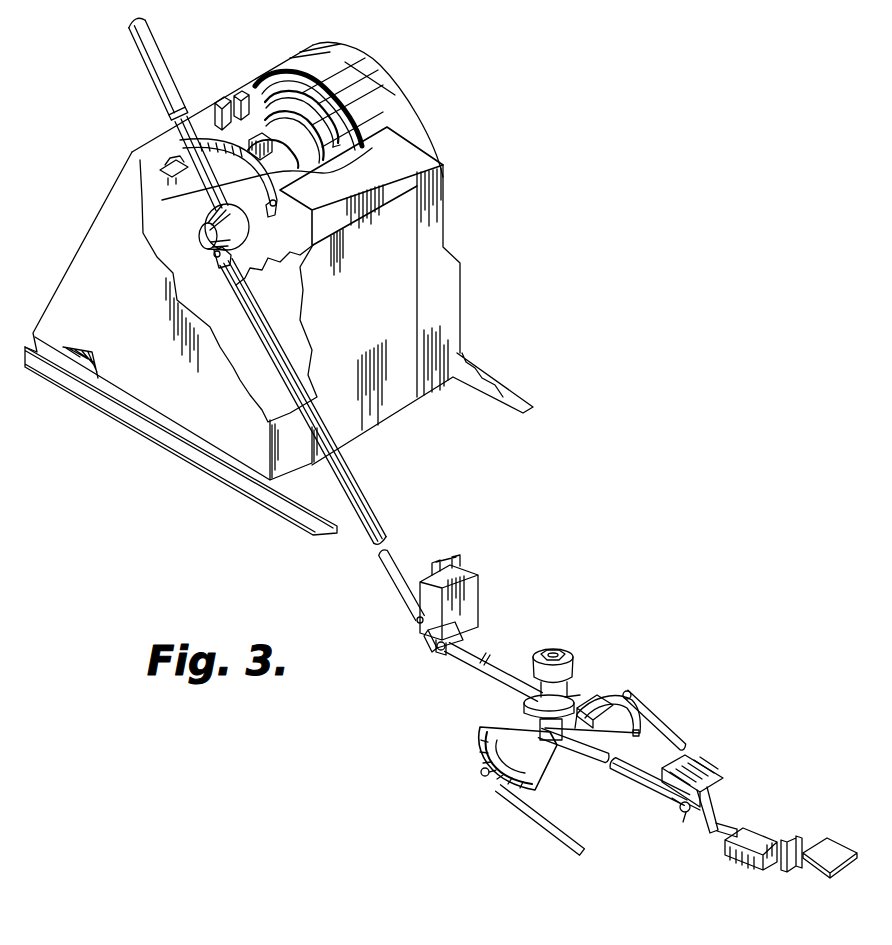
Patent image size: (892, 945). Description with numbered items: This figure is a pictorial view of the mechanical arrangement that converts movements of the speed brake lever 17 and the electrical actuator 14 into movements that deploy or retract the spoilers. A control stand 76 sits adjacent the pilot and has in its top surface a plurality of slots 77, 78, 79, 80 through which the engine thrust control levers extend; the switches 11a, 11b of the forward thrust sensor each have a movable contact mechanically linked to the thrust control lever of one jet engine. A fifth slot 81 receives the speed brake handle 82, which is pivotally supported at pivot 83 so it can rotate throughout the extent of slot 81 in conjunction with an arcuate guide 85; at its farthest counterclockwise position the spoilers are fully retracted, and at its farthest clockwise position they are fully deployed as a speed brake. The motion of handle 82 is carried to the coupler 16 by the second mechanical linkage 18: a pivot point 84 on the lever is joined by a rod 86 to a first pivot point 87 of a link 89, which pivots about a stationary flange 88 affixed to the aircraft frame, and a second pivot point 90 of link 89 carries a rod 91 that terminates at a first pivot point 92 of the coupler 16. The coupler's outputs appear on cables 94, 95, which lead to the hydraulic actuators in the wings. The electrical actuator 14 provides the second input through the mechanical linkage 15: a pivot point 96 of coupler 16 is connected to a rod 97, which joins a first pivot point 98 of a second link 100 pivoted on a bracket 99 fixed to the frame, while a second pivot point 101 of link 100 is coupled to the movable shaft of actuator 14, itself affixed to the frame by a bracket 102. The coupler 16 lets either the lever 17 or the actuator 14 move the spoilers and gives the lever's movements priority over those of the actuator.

The switch 11a is at (230, 90).
The switch 11b is at (217, 110).
The electrical actuator 14 is at (795, 919).
The mechanical linkage 15 is at (680, 916).
The coupler 16 is at (483, 823).
The speed brake lever 17 is at (175, 502).
The second mechanical linkage 18 is at (383, 673).
The control stand 76 is at (442, 283).
The slot 77 is at (363, 107).
The slot 78 is at (338, 158).
The slot 79 is at (285, 153).
The slot 80 is at (318, 170).
The fifth slot 81 is at (317, 245).
The speed brake handle 82 is at (157, 97).
The pivot 83 is at (207, 235).
The pivot point 84 is at (217, 253).
The arcuate guide 85 is at (163, 200).
The rod 86 is at (355, 485).
The first pivot point 87 is at (412, 622).
The stationary flange 88 is at (477, 583).
The link 89 is at (447, 647).
The second pivot point 90 is at (457, 640).
The rod 91 is at (500, 673).
The first pivot point 92 is at (570, 683).
The cable 94 is at (668, 720).
The cable 95 is at (550, 830).
The pivot point 96 is at (487, 718).
The rod 97 is at (647, 788).
The first pivot point 98 is at (685, 812).
The bracket 99 is at (705, 772).
The second link 100 is at (710, 797).
The second pivot point 101 is at (727, 822).
The bracket 102 is at (838, 847).